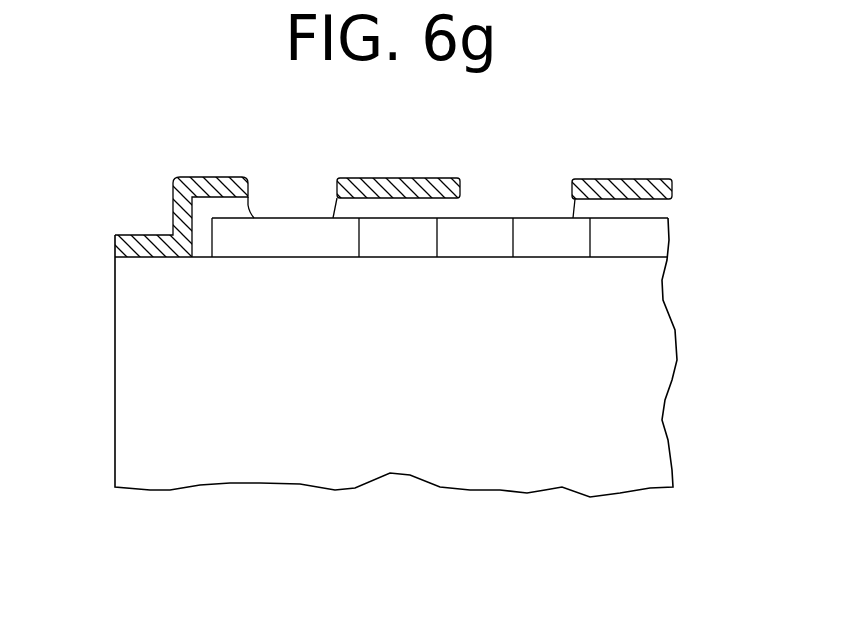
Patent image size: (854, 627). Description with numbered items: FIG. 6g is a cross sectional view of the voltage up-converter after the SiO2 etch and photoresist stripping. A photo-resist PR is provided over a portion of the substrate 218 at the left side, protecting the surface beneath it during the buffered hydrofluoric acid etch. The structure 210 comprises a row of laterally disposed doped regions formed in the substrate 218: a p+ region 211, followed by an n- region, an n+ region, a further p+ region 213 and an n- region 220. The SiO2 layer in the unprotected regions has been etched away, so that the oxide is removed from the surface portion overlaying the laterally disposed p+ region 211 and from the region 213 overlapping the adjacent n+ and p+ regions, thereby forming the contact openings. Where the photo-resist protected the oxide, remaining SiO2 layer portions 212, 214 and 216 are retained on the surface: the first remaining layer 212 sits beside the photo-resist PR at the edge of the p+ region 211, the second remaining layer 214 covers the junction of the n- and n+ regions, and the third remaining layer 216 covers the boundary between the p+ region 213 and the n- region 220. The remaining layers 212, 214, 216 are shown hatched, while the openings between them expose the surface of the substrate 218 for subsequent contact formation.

The semiconductor structure 210 is at (318, 135).
The p+ region 211 is at (292, 210).
The mask layer 212 is at (228, 185).
The region overlapping adjacent n+ and p+ regions 213 is at (517, 212).
The mask layer 214 is at (424, 183).
The mask layer 216 is at (633, 183).
The substrate 218 is at (113, 347).
The n- doped region 220 is at (658, 245).
The photo-resist PR is at (172, 235).